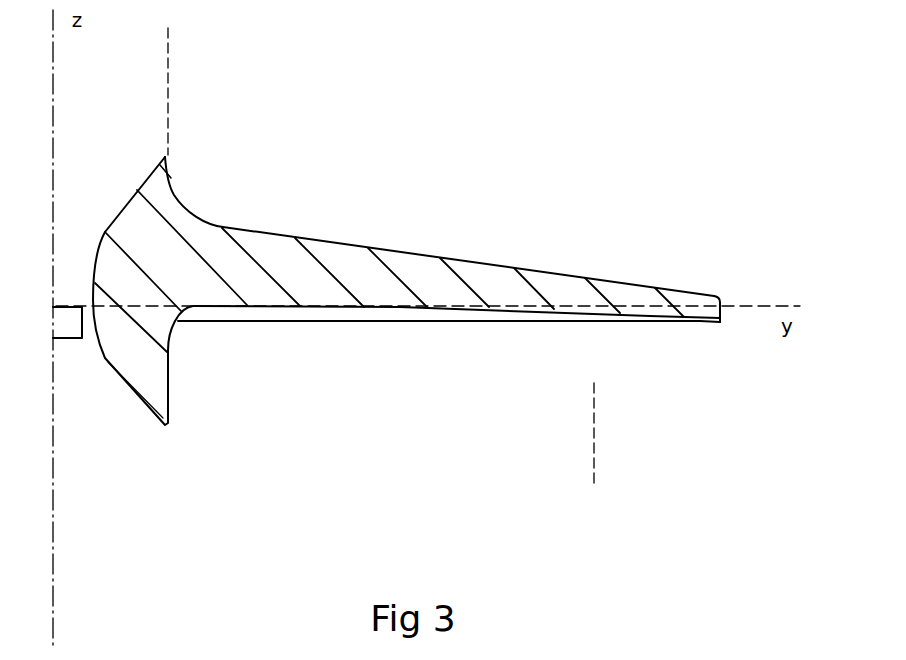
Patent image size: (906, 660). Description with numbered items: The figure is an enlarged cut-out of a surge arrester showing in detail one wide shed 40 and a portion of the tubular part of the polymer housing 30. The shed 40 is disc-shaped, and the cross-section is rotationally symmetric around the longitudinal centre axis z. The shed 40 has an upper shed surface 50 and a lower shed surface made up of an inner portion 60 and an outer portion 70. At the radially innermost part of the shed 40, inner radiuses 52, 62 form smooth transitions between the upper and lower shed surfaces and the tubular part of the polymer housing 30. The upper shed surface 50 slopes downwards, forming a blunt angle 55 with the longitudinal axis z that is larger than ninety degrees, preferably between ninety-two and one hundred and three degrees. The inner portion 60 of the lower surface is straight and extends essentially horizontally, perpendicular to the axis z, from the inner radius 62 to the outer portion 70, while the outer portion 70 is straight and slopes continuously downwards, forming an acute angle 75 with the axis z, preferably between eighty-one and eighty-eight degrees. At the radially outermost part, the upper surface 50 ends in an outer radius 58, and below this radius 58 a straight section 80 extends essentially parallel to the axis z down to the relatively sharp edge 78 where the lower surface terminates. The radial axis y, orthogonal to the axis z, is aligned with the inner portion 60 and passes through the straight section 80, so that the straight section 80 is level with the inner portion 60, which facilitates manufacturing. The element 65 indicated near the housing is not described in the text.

The polymer housing 30 is at (82, 162).
The wide shed 40 is at (632, 66).
The upper shed surface 50 is at (470, 210).
The inner radius 52 is at (167, 208).
The blunt angle 55 is at (176, 108).
The outer radius 58 is at (728, 288).
The inner portion of the lower shed surface 60 is at (210, 333).
The inner radius 62 is at (186, 345).
The hub element 65 is at (76, 355).
The outer portion of the lower shed surface 70 is at (430, 333).
The acute angle 75 is at (711, 338).
The sharp edge 78 is at (730, 332).
The straight section 80 is at (722, 308).